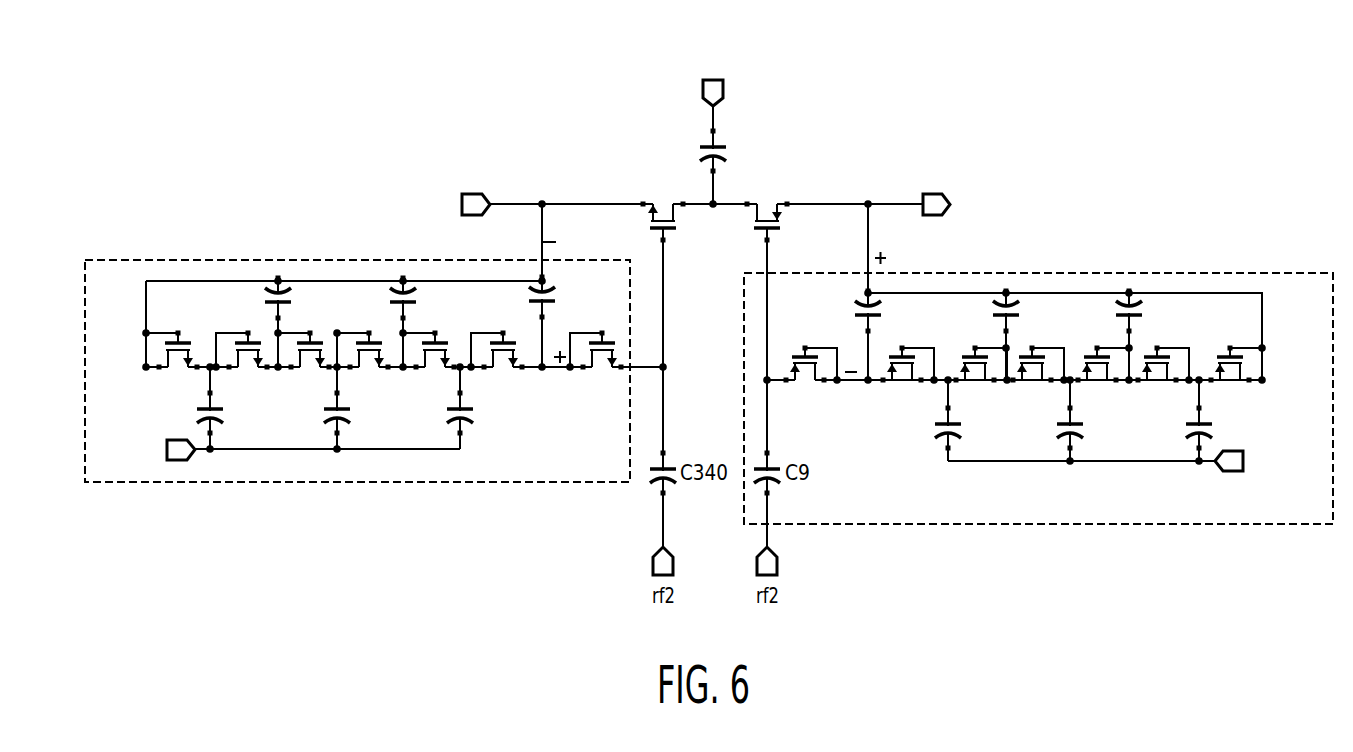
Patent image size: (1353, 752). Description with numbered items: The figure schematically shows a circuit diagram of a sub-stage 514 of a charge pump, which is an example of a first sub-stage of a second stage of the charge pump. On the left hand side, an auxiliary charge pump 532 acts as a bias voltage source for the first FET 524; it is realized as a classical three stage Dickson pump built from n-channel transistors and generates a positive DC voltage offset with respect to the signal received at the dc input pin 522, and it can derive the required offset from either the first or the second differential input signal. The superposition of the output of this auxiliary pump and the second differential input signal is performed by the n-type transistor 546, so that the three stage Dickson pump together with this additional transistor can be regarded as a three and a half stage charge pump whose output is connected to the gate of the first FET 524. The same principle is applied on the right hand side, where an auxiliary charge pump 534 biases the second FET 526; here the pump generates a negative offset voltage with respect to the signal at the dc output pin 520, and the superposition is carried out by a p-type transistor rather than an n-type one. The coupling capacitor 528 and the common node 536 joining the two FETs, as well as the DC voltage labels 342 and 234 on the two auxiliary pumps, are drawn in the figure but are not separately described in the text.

The sub-stage 514 is at (1126, 109).
The dc output pin 520 is at (933, 193).
The dc input pin 522 is at (470, 193).
The first FET 524 is at (657, 216).
The second FET 526 is at (751, 212).
The capacitor C228 528 is at (702, 143).
The auxiliary charge pump 532 is at (369, 419).
The auxiliary charge pump 534 is at (1038, 369).
The common node 536 is at (724, 194).
The n-type transistor 546 is at (601, 358).
The DC voltage 342 is at (397, 461).
The DC voltage 234 is at (1041, 489).